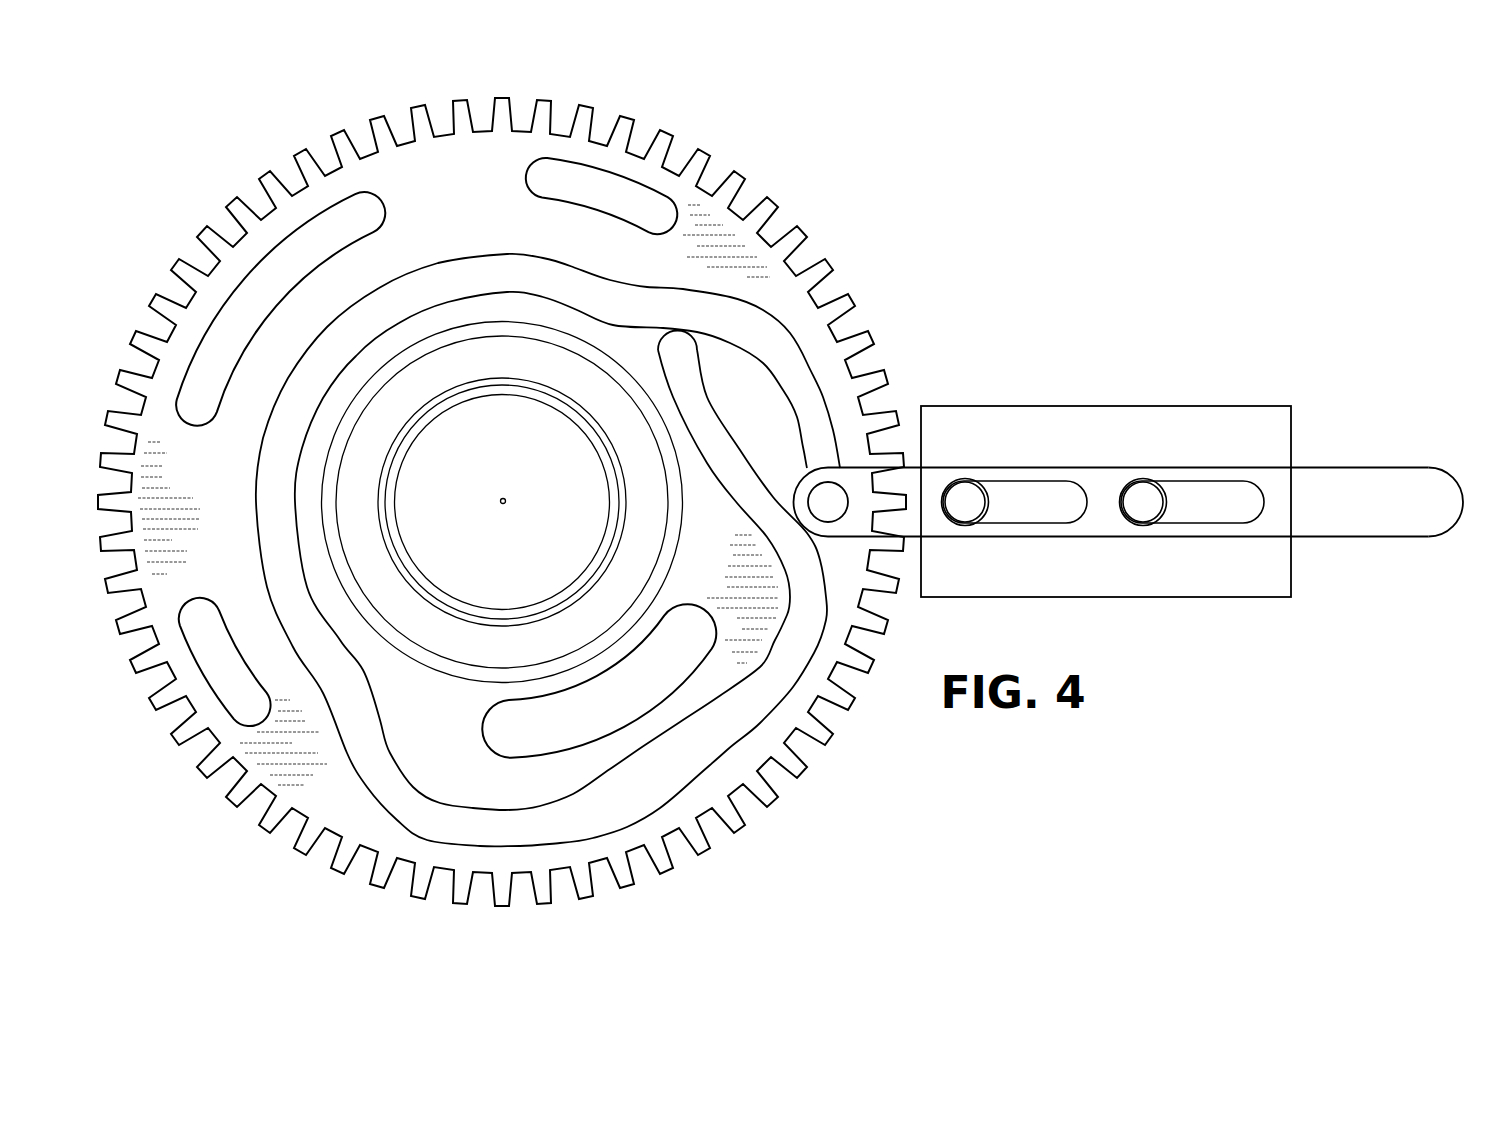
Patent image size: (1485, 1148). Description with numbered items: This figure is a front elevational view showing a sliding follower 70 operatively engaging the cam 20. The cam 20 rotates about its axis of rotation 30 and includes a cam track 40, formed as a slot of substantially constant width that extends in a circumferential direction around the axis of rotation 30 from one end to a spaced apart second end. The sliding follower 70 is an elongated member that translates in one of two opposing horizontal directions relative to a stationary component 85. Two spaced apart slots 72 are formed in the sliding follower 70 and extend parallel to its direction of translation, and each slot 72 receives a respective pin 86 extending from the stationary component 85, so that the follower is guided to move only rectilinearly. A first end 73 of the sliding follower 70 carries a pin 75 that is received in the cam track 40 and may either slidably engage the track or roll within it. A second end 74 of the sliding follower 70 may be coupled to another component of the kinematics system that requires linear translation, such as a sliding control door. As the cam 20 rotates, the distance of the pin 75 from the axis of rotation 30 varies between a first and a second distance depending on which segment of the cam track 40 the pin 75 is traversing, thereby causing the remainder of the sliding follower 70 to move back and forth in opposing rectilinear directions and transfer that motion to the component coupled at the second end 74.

The cam 20 is at (775, 200).
The axis of rotation 30 is at (505, 499).
The cam track 40 is at (811, 395).
The sliding follower 70 is at (1112, 466).
The slots 72 is at (998, 512).
The first end 73 is at (803, 470).
The second end 74 is at (1432, 510).
The pin 75 is at (846, 501).
The stationary component 85 is at (1058, 405).
The pin 86 is at (962, 483).